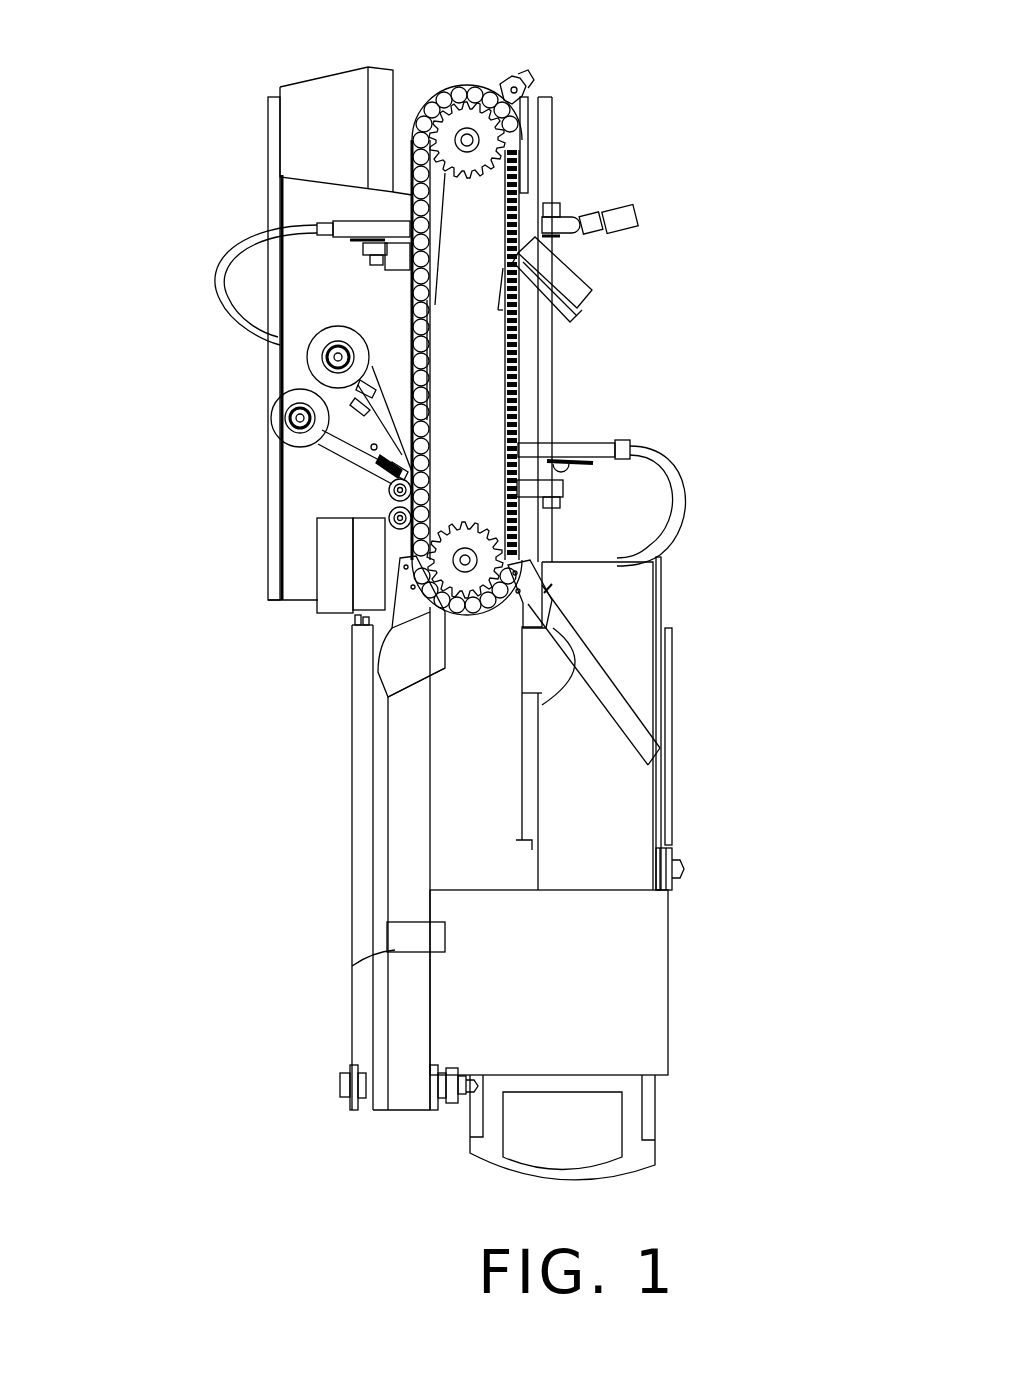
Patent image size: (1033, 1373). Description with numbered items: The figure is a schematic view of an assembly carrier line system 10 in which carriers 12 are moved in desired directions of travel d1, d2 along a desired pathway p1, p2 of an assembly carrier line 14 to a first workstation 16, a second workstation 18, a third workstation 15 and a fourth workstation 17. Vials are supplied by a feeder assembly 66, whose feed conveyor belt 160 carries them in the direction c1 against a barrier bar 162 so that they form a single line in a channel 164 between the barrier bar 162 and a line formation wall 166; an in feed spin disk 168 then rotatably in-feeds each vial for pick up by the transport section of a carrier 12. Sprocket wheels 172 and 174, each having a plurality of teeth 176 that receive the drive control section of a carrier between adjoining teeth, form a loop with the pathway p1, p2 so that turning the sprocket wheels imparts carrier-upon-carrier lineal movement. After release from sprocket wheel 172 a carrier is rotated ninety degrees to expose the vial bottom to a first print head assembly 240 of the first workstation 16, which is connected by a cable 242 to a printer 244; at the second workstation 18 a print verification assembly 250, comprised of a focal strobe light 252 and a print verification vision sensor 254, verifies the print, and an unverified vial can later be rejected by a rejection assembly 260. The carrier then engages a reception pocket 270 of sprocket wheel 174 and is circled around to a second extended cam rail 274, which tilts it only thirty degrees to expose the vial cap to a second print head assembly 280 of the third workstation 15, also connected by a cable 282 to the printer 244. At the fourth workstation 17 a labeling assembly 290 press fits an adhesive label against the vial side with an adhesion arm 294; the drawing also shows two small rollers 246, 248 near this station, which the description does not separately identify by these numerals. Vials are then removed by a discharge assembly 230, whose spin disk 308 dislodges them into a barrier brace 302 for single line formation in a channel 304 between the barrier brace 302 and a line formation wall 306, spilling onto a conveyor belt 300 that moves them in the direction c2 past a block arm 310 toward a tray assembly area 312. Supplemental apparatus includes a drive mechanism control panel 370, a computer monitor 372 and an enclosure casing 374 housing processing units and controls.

The assembly carrier line system 10 is at (262, 1075).
The carriers 12 is at (433, 350).
The assembly carrier line 14 is at (471, 290).
The third workstation 15 is at (205, 237).
The first workstation 16 is at (657, 485).
The fourth workstation 17 is at (466, 360).
The second workstation 18 is at (655, 247).
The feeder assembly 66 is at (672, 726).
The feed conveyor belt 160 is at (741, 867).
The barrier bar 162 is at (743, 723).
The channel 164 is at (670, 662).
The line formation wall 166 is at (689, 666).
The in feed spin disk 168 is at (282, 728).
The sprocket wheel 172 is at (540, 560).
The sprocket wheel 174 is at (578, 122).
The teeth 176 is at (619, 329).
The discharge assembly 230 is at (275, 626).
The first print head assembly 240 is at (662, 439).
The cable 242 is at (448, 462).
The printer 244 is at (653, 1120).
The upper roller 246 is at (245, 451).
The lower roller 248 is at (245, 488).
The print verification assembly 250 is at (655, 280).
The focal strobe light 252 is at (652, 308).
The print verification vision sensor 254 is at (657, 213).
The rejection assembly 260 is at (608, 52).
The reception pocket 270 is at (475, 239).
The second extended cam rail 274 is at (205, 330).
The second print head assembly 280 is at (247, 167).
The cable 282 is at (247, 215).
The labeling assembly 290 is at (243, 365).
The adhesion arm 294 is at (241, 395).
The conveyor belt 300 is at (319, 1031).
The barrier brace 302 is at (306, 858).
The channel 304 is at (272, 861).
The line formation wall 306 is at (270, 630).
The spin disk 308 is at (240, 564).
The block arm 310 is at (295, 923).
The tray assembly area 312 is at (633, 982).
The drive mechanism control panel 370 is at (223, 553).
The computer monitor 372 is at (276, 104).
The enclosure casing 374 is at (256, 120).
The desired pathway p1 is at (381, 301).
The desired pathway p2 is at (569, 339).
The direction of travel d1 is at (495, 423).
The direction of travel d2 is at (438, 487).
The feed direction c1 is at (582, 712).
The discharge direction c2 is at (407, 830).